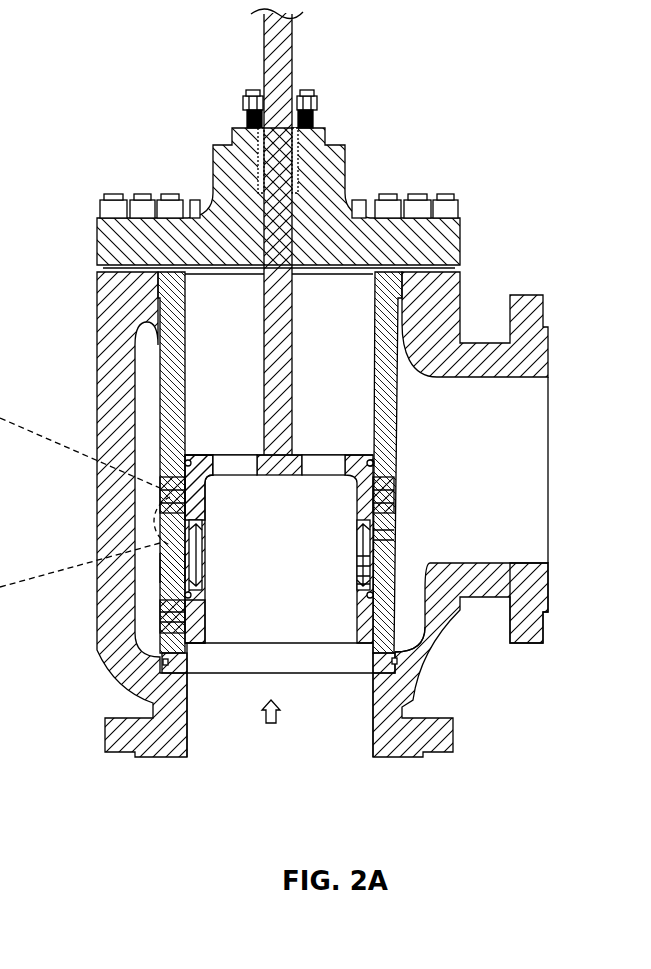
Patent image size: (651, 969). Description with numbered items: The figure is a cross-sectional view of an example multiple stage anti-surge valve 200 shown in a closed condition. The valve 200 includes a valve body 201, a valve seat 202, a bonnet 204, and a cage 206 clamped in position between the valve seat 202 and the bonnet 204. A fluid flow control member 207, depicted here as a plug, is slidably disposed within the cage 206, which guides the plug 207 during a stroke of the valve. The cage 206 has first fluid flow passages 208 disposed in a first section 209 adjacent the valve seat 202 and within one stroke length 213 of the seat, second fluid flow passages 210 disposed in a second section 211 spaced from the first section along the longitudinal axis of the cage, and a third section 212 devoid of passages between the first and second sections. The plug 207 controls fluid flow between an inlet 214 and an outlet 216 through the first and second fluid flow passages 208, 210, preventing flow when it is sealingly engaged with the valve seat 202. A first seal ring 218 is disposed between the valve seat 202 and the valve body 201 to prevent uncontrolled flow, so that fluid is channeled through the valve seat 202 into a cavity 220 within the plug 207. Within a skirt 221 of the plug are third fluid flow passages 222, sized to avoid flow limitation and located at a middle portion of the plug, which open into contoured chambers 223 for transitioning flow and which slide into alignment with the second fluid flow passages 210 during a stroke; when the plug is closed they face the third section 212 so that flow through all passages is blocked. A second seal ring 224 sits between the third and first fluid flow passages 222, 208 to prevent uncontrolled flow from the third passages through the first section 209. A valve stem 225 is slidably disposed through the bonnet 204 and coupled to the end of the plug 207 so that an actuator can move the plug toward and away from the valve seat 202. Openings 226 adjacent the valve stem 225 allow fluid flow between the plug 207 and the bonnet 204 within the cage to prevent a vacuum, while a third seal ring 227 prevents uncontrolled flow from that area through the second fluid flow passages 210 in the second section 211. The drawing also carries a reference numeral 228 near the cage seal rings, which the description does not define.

The multiple stage anti-surge valve 200 is at (480, 297).
The valve body 201 is at (410, 742).
The valve seat 202 is at (230, 655).
The bonnet 204 is at (460, 222).
The cage 206 is at (395, 433).
The fluid flow control member 207 is at (300, 460).
The first fluid flow passages 208 is at (396, 633).
The first section 209 is at (202, 622).
The second fluid flow passages 210 is at (396, 498).
The second section 211 is at (193, 487).
The third section 212 is at (170, 565).
The stroke length 213 is at (163, 527).
The inlet 214 is at (315, 740).
The outlet 216 is at (538, 463).
The first seal ring 218 is at (398, 661).
The cavity 220 is at (305, 578).
The skirt 221 is at (365, 585).
The third fluid flow passages 222 is at (353, 550).
The contoured chambers 223 is at (365, 565).
The second seal ring 224 is at (400, 589).
The valve stem 225 is at (283, 155).
The openings 226 is at (250, 460).
The third seal ring 227 is at (378, 466).
The ring 228 is at (395, 536).